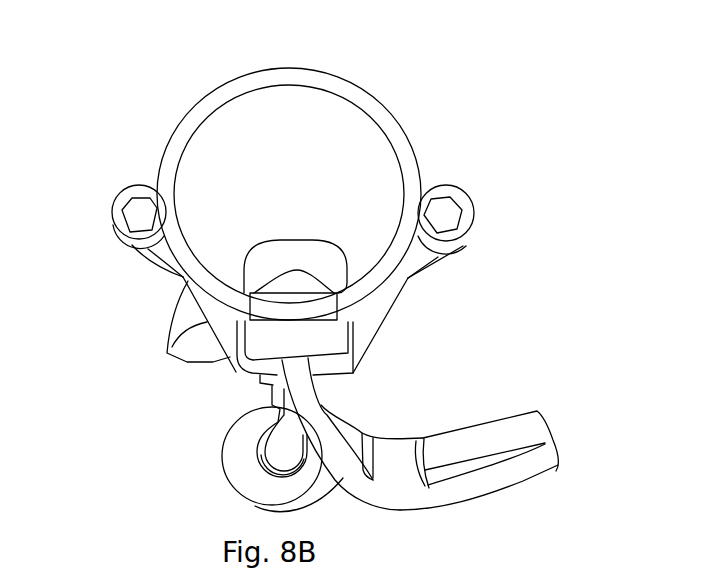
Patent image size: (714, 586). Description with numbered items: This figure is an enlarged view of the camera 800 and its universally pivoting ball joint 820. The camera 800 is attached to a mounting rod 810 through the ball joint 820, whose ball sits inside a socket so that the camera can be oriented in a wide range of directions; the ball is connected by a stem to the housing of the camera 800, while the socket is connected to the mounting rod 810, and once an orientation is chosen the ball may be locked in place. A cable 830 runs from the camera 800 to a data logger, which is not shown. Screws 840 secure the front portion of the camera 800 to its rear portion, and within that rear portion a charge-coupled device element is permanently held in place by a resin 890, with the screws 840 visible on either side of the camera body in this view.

The camera 800 is at (393, 74).
The resin 890 is at (365, 157).
The screws 840 is at (133, 204).
The universally pivoting ball joint 820 is at (237, 463).
The mounting rod 810 is at (430, 440).
The cable 830 is at (518, 480).